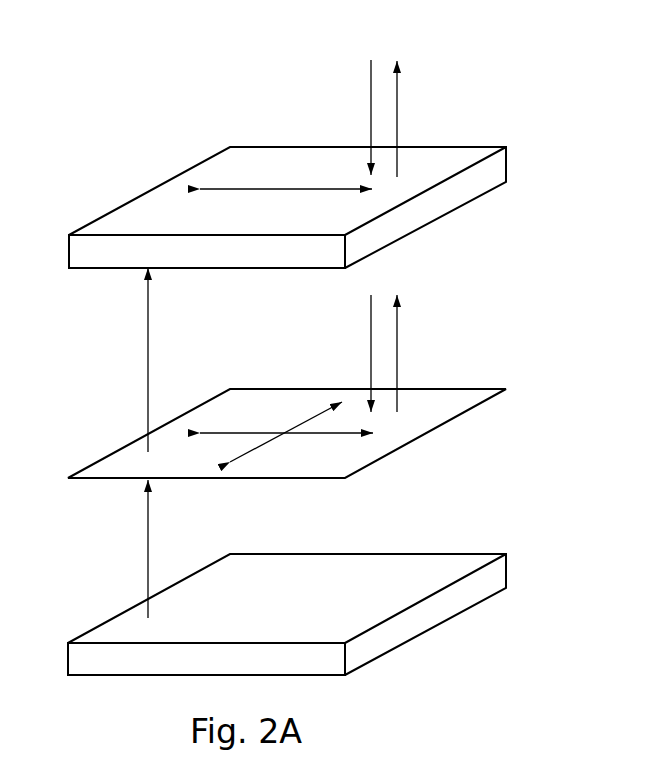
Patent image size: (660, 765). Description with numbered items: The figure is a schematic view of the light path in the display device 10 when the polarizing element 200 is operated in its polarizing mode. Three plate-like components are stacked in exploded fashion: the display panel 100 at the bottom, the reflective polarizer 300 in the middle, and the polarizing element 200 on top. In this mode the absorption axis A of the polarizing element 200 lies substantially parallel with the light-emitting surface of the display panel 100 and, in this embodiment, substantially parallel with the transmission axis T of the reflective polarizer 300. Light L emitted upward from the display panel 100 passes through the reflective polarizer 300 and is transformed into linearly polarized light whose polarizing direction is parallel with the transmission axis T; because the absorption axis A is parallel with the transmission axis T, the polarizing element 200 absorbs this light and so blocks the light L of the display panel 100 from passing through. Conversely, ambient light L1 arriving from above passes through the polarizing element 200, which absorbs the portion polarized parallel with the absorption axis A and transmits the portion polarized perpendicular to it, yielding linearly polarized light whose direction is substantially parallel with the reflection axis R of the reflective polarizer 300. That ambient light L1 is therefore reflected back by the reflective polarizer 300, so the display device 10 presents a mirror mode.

The display device 10 is at (106, 69).
The display panel 100 is at (430, 610).
The polarizing element 200 is at (432, 200).
The reflective polarizer 300 is at (435, 430).
The light L is at (148, 585).
The ambient light L1 is at (371, 90).
The absorption axis A is at (285, 188).
The transmission axis T is at (262, 432).
The reflection axis R is at (310, 413).